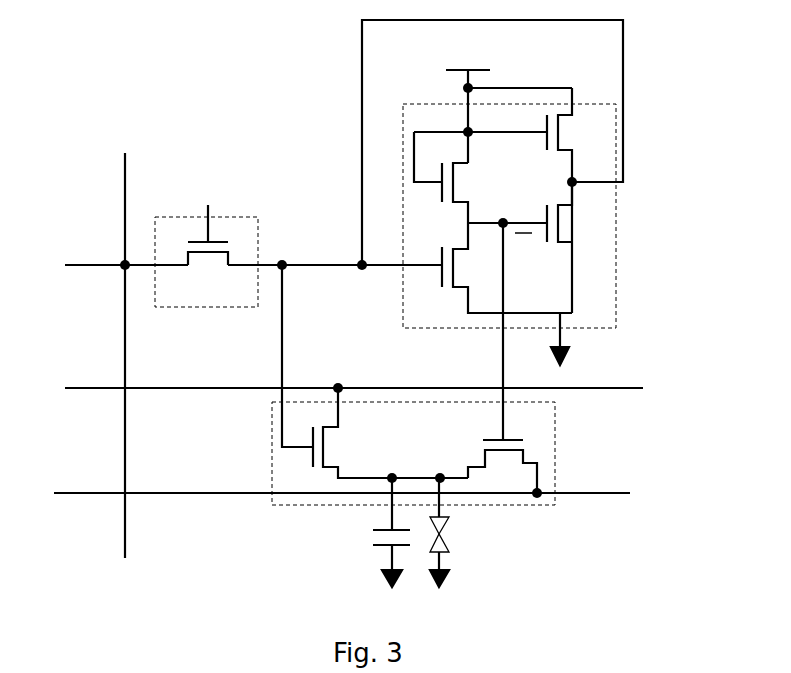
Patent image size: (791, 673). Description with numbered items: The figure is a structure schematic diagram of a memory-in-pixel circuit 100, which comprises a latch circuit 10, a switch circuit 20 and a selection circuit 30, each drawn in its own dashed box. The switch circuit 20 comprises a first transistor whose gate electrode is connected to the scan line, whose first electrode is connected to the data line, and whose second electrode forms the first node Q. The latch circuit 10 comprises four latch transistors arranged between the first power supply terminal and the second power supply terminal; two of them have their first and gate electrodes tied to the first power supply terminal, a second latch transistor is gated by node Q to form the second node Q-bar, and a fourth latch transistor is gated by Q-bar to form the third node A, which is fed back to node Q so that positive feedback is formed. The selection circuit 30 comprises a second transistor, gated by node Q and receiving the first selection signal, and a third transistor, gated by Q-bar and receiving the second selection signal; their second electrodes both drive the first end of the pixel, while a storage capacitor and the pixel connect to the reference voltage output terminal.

The memory-in-pixel circuit 100 is at (150, 66).
The latch circuit 10 is at (615, 248).
The switch circuit 20 is at (243, 217).
The selection circuit 30 is at (557, 455).